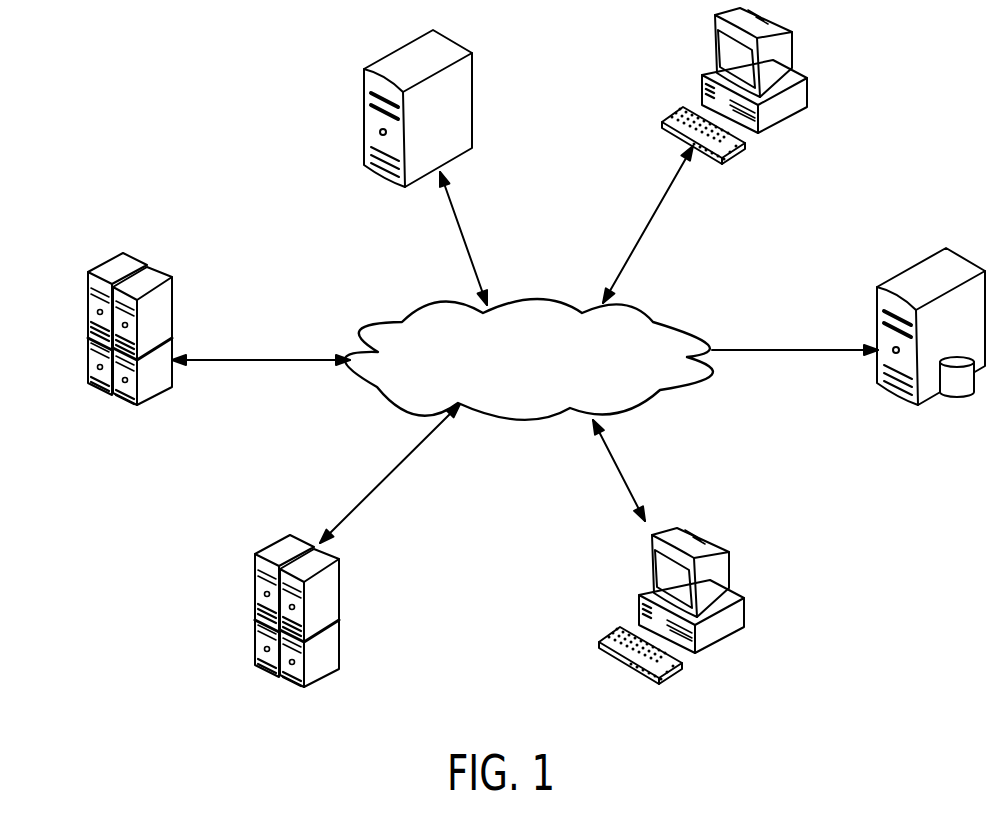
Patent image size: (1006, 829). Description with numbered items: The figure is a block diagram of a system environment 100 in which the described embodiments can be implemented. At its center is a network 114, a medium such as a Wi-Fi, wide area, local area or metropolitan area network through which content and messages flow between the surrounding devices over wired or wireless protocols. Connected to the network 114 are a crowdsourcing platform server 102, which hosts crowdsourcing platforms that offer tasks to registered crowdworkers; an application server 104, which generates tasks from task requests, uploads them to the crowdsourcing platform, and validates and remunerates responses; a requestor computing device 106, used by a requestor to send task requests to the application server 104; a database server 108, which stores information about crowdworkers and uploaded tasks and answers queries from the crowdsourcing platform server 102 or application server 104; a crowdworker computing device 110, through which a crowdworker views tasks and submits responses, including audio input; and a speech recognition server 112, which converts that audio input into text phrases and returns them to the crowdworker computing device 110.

The system environment 100 is at (136, 137).
The crowdsourcing platform server 102 is at (88, 322).
The application server 104 is at (364, 77).
The requestor computing device 106 is at (715, 57).
The database server 108 is at (878, 297).
The crowdworker computing device 110 is at (652, 577).
The speech recognition server 112 is at (256, 610).
The network 114 is at (378, 390).